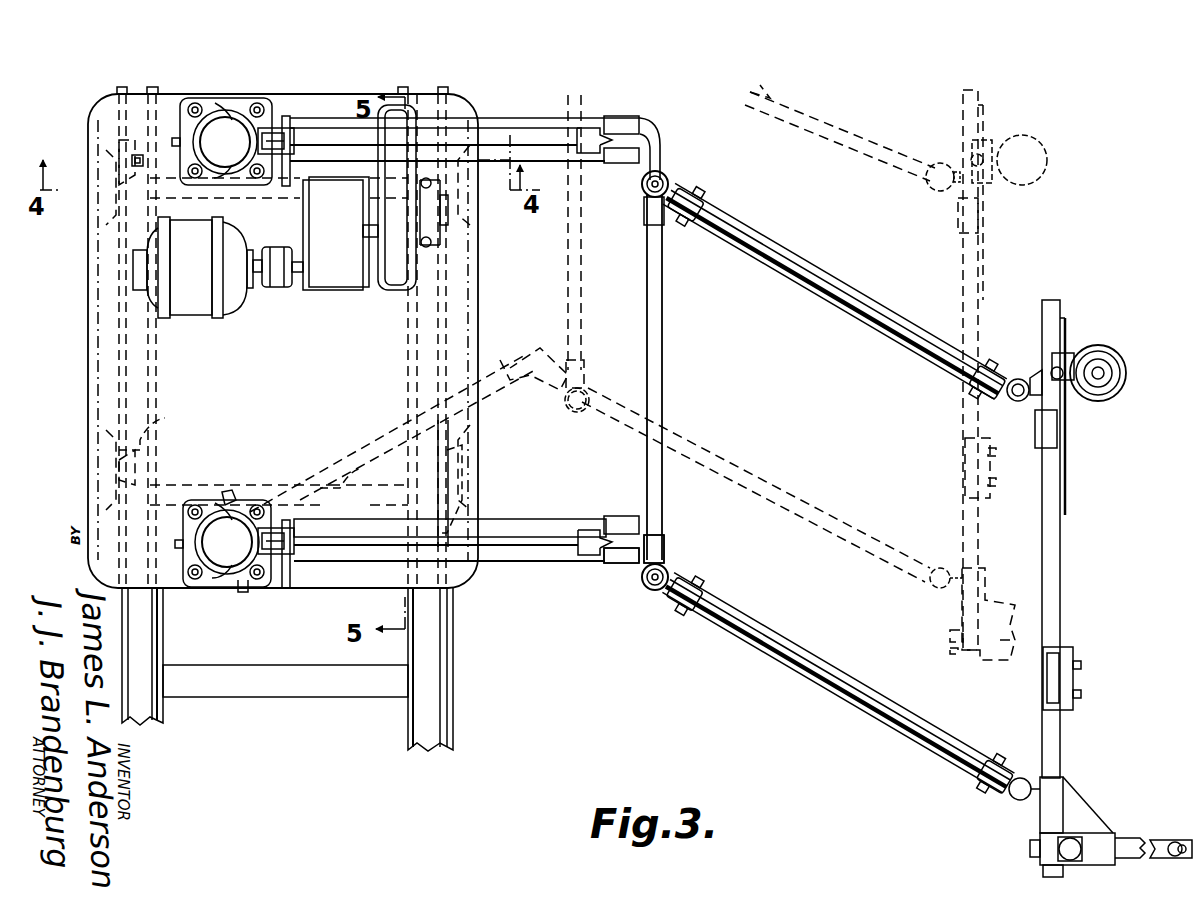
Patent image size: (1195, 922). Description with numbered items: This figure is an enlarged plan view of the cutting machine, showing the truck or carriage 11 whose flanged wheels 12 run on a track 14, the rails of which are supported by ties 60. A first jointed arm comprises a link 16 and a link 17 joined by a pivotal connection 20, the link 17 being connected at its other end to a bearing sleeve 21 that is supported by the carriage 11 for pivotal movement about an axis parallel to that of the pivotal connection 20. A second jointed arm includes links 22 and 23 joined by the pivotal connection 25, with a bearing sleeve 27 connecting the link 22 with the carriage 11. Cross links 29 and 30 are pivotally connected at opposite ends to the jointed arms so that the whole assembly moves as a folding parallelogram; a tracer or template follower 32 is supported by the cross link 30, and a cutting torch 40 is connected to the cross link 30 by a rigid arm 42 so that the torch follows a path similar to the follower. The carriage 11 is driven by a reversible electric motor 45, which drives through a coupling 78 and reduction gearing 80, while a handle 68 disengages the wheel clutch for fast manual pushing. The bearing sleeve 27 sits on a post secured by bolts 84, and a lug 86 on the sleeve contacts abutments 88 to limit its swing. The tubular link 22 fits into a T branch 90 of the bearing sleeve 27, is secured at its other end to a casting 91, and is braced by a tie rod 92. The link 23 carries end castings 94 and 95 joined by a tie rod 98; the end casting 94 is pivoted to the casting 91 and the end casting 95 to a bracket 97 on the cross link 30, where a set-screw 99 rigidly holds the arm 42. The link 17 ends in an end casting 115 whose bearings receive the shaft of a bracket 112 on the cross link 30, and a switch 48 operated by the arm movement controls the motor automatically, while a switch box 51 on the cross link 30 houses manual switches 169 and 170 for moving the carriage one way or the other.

The carriage 11 is at (90, 345).
The flanged wheels 12 is at (290, 466).
The track 14 is at (157, 626).
The link 16 is at (492, 124).
The link 17 is at (845, 140).
The pivotal connection 20 is at (642, 195).
The bearing sleeve 21 is at (233, 142).
The link 22 is at (500, 410).
The link 23 is at (738, 470).
The pivotal connection 25 is at (645, 590).
The bearing sleeve 27 is at (234, 543).
The cross link 29 is at (568, 298).
The cross link 30 is at (965, 520).
The template follower 32 is at (1045, 150).
The cutting torch 40 is at (1172, 840).
The rigid arm 42 is at (1130, 840).
The reversible electric motor 45 is at (193, 267).
The switch 48 is at (943, 160).
The switch box 51 is at (1000, 470).
The ties 60 is at (272, 684).
The handle 68 is at (137, 155).
The coupling 78 is at (275, 290).
The reduction gearing 80 is at (340, 233).
The bolts 84 is at (225, 492).
The lug 86 is at (192, 560).
The abutments 88 is at (240, 495).
The T branch 90 is at (290, 590).
The casting 91 is at (628, 565).
The tie rod 92 is at (508, 530).
The end casting 94 is at (668, 565).
The end casting 95 is at (1003, 797).
The bracket 97 is at (1008, 652).
The tie rod 98 is at (797, 658).
The set-screw 99 is at (1071, 842).
The bracket 112 is at (1033, 375).
The end casting 115 is at (1005, 398).
The switch 169 is at (1082, 694).
The switch 170 is at (1082, 668).